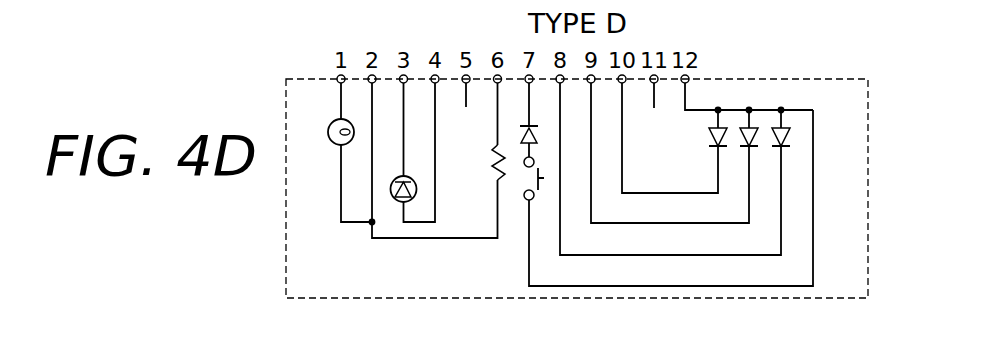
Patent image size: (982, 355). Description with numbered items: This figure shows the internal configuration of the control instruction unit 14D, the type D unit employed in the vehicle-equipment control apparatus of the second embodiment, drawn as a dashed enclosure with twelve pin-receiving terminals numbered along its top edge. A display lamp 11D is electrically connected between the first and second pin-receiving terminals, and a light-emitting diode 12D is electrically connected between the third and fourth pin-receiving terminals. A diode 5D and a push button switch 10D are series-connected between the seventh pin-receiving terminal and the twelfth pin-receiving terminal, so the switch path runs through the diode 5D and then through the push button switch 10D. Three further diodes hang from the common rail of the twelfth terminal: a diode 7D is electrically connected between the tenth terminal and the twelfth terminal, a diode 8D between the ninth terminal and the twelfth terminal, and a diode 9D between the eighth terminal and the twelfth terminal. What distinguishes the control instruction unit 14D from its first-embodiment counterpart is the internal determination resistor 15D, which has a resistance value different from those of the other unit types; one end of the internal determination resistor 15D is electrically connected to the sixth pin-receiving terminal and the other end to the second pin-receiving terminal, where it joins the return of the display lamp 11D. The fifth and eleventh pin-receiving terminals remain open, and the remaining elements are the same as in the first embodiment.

The diode 5D is at (522, 137).
The diode 7D is at (720, 148).
The diode 8D is at (752, 148).
The diode 9D is at (788, 150).
The push button switch 10D is at (522, 175).
The display lamp 11D is at (330, 145).
The light-emitting diode 12D is at (398, 203).
The control instruction unit 14D is at (787, 80).
The internal determination resistor 15D is at (492, 173).